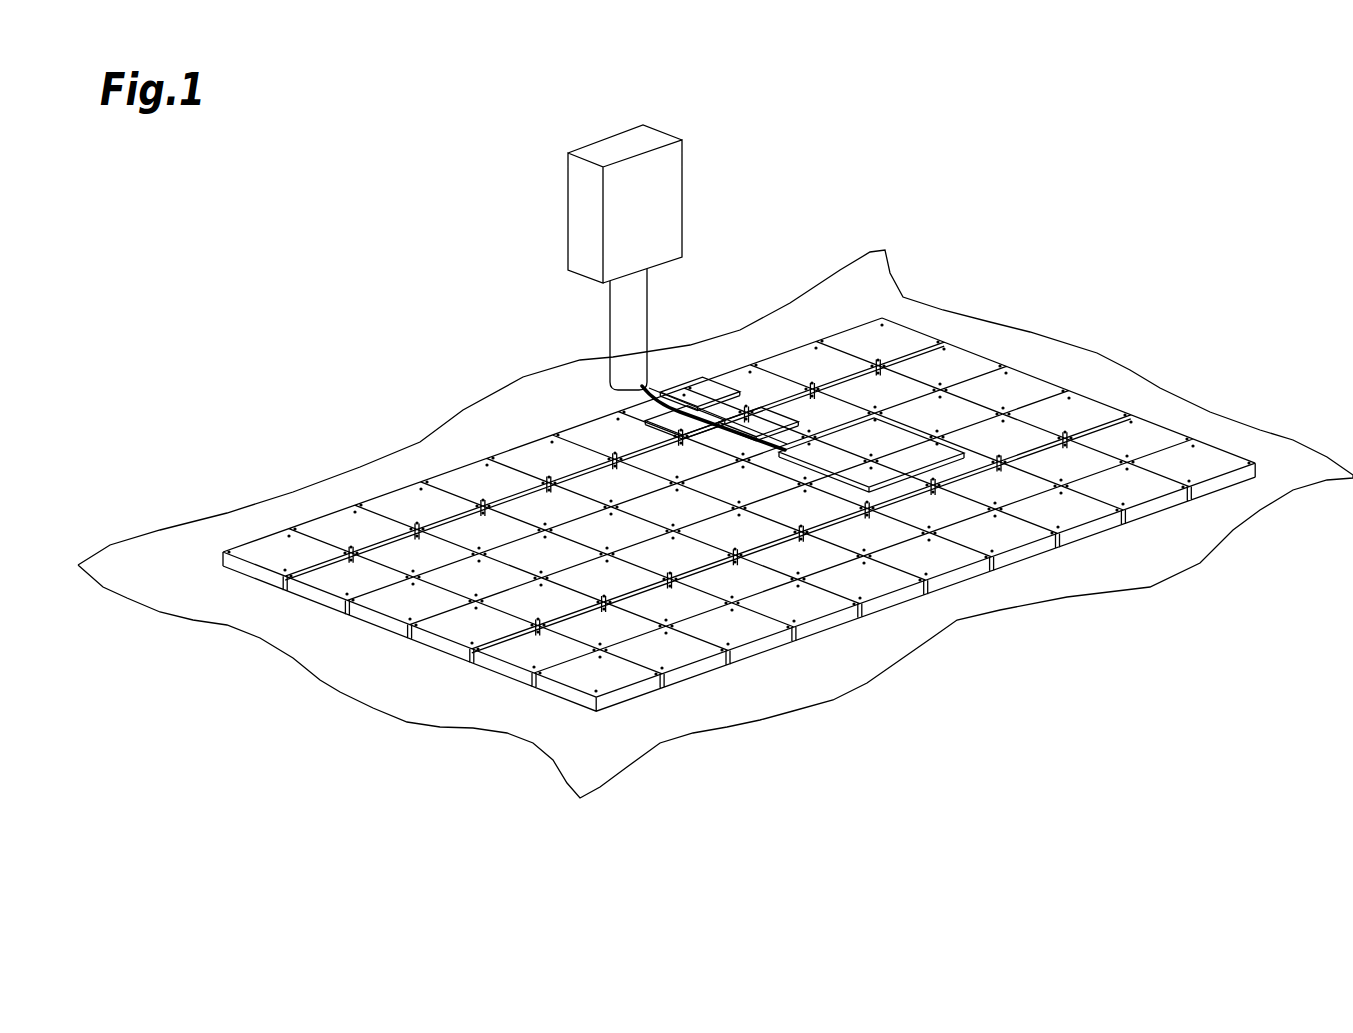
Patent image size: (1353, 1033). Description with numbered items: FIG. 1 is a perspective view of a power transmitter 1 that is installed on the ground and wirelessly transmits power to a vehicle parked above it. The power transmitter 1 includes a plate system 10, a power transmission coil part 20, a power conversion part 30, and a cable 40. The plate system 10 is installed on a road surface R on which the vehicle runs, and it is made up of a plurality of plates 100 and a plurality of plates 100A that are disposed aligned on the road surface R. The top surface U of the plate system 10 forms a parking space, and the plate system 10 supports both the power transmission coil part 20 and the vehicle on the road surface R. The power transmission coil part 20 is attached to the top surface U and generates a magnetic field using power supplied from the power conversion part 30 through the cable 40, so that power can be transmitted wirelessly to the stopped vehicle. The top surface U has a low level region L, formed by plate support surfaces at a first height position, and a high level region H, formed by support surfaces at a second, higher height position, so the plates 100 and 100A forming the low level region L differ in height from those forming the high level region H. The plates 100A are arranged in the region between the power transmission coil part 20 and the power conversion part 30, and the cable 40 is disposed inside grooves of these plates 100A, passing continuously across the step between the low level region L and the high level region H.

The power transmitter 1 is at (1058, 238).
The plate system 10 is at (1107, 376).
The plate 100 is at (467, 537).
The plate 100A is at (797, 410).
The power transmission coil part 20 is at (921, 490).
The power conversion part 30 is at (683, 180).
The cable 40 is at (650, 398).
The low level region L is at (888, 396).
The road surface R is at (1272, 450).
The high level region H is at (400, 601).
The top surface U is at (590, 582).